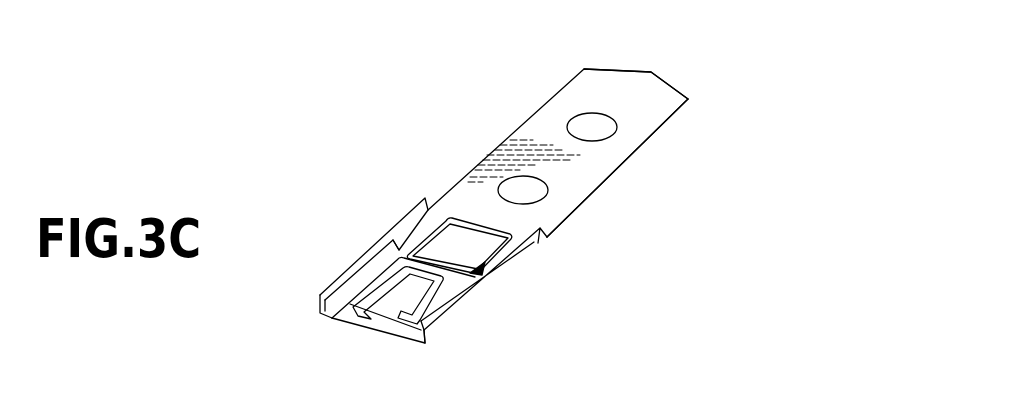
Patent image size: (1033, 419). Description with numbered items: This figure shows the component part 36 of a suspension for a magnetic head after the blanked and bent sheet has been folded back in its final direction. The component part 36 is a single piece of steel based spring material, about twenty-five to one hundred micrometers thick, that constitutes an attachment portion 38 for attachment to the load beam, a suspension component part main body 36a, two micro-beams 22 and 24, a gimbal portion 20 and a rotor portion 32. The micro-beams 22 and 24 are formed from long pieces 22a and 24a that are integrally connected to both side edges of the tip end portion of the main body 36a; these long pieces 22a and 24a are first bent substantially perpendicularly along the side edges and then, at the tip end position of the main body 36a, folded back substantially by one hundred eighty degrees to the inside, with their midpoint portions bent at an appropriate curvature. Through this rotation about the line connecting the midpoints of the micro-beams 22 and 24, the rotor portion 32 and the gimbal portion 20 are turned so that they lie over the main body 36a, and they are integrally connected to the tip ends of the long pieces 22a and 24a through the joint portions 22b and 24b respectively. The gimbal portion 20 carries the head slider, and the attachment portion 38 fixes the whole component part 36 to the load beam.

The gimbal portion 20 is at (400, 302).
The micro-beam 22 is at (320, 318).
The long piece 22a is at (330, 284).
The joint portion 22b is at (396, 255).
The micro-beam 24 is at (428, 348).
The long piece 24a is at (460, 313).
The joint portion 24b is at (465, 280).
The rotor portion 32 is at (463, 250).
The component part 36 is at (545, 103).
The suspension component part main body 36a is at (590, 175).
The attachment portion 38 is at (660, 104).